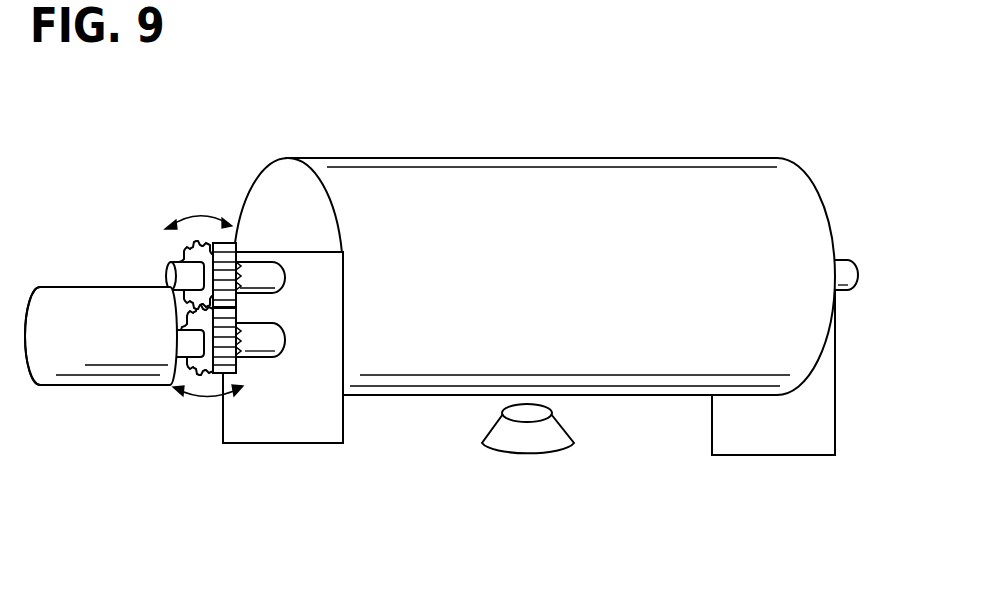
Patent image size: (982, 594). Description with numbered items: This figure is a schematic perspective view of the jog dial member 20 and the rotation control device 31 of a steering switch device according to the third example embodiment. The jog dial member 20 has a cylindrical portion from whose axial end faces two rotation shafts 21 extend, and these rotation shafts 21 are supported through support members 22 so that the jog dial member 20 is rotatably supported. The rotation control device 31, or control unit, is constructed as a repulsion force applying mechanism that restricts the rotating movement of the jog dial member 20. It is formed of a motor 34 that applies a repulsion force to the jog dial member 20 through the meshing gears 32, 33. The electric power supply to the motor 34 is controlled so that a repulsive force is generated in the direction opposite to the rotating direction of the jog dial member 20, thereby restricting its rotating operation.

The jog dial member 20 is at (368, 158).
The rotation shafts 21 is at (260, 272).
The support members 22 is at (290, 430).
The rotation control device 31 is at (159, 312).
The gear 32 is at (188, 243).
The gear 33 is at (239, 363).
The motor 34 is at (97, 372).